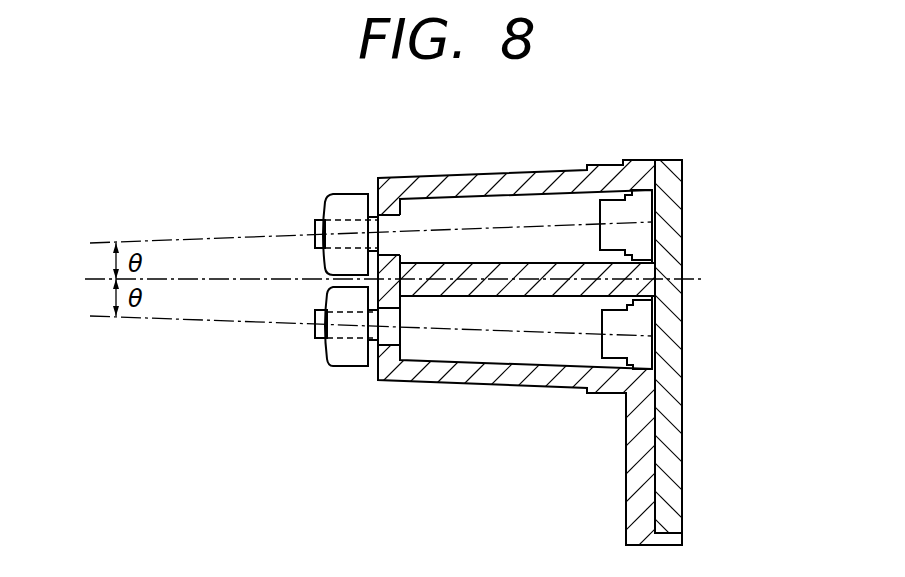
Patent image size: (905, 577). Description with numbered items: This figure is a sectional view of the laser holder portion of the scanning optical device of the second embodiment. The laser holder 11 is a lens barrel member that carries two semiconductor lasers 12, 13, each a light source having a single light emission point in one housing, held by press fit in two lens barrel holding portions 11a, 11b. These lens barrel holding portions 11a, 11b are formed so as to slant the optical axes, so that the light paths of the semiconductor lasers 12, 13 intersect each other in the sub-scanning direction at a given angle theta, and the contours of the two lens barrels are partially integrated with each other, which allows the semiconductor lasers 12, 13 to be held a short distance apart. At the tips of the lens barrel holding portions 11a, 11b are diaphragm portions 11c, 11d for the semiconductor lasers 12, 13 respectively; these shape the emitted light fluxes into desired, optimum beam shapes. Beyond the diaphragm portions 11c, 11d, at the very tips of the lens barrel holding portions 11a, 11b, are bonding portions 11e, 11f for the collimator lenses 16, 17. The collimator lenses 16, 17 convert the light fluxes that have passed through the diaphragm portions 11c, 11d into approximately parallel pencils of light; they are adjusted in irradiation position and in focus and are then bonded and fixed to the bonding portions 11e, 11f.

The laser holder 11 is at (648, 490).
The lens barrel holding portion 11a is at (540, 380).
The lens barrel holding portion 11b is at (553, 192).
The diaphragm portion 11c is at (395, 381).
The diaphragm portion 11d is at (390, 213).
The bonding portion 11e is at (315, 334).
The bonding portion 11f is at (315, 222).
The semiconductor laser 12 is at (640, 350).
The semiconductor laser 13 is at (640, 248).
The collimator lens 16 is at (348, 367).
The collimator lens 17 is at (347, 193).